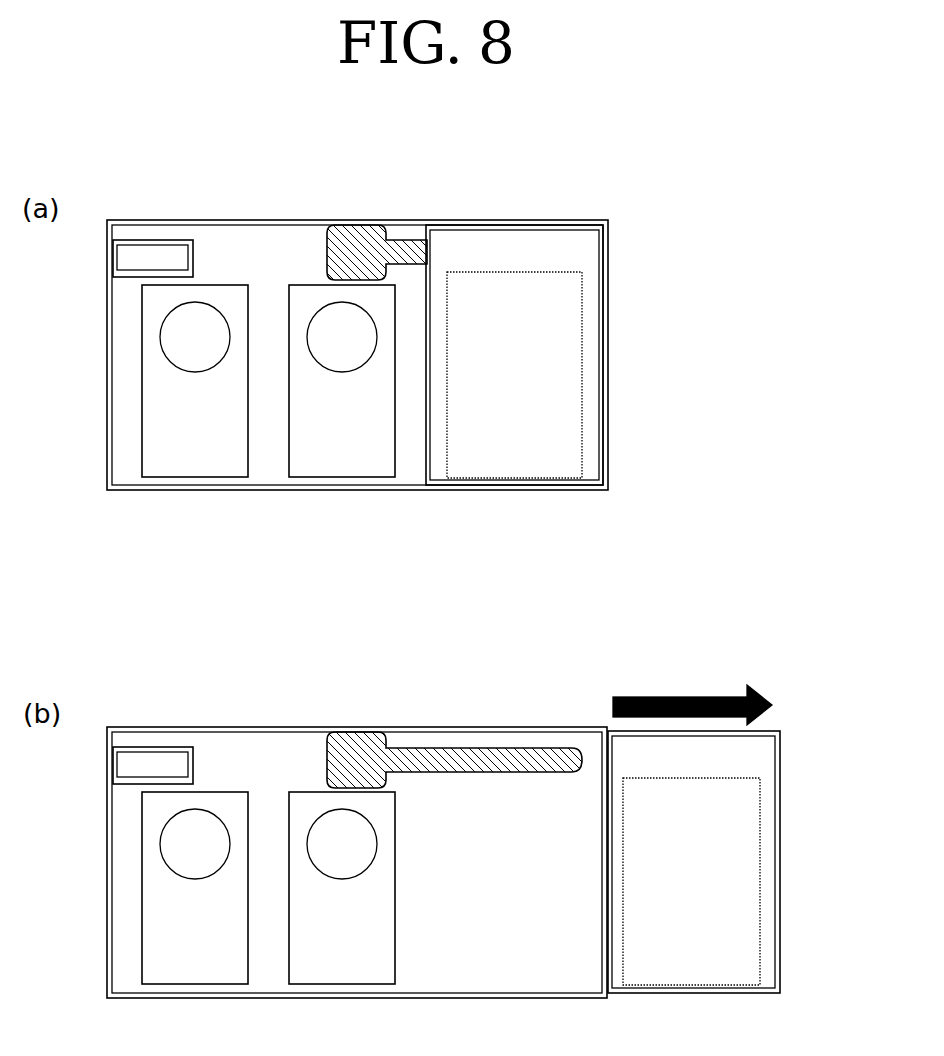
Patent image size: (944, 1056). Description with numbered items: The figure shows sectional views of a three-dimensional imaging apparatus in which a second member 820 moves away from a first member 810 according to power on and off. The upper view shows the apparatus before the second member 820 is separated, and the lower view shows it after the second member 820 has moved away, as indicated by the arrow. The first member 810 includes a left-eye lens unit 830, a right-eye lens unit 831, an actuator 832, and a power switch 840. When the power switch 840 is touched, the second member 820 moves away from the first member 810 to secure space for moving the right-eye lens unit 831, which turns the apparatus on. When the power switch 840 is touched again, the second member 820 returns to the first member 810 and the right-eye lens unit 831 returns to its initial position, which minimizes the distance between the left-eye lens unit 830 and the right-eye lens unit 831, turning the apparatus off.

The first member 810 is at (265, 218).
The second member 820 is at (575, 248).
The left-eye lens unit 830 is at (195, 448).
The right-eye lens unit 831 is at (337, 448).
The actuator 832 is at (357, 247).
The power switch 840 is at (158, 253).